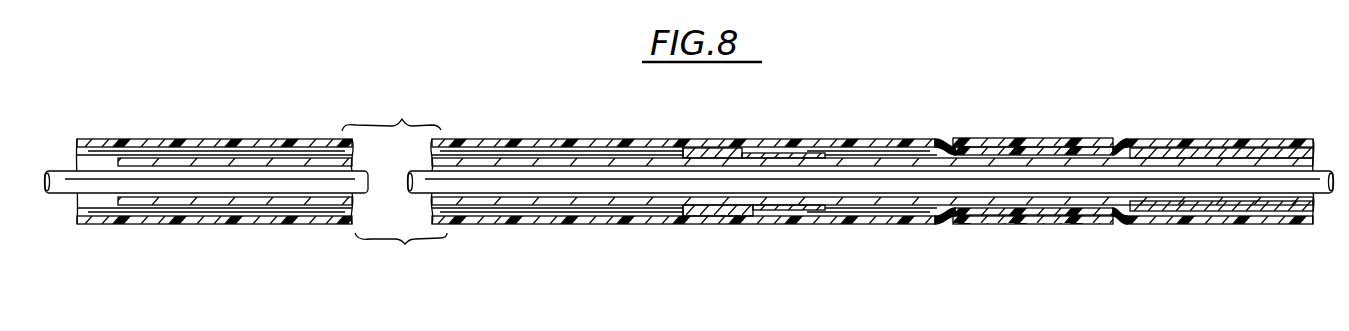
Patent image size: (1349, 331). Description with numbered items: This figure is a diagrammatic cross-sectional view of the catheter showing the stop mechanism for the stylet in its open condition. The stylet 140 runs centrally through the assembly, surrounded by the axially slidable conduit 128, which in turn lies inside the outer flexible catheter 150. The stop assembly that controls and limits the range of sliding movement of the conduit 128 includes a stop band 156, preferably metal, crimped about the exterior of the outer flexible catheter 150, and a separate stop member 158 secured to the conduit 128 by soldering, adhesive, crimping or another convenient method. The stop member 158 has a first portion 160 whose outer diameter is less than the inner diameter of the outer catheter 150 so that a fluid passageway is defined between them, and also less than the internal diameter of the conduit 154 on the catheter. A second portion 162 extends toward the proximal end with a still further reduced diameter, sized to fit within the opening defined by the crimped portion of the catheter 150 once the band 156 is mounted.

The conduit 128 is at (535, 196).
The stylet 140 is at (1320, 170).
The outer flexible catheter 150 is at (607, 142).
The conduit 154 is at (1202, 206).
The stop band 156 is at (1027, 138).
The stop member 158 is at (757, 223).
The first portion 160 is at (683, 218).
The second portion 162 is at (803, 210).